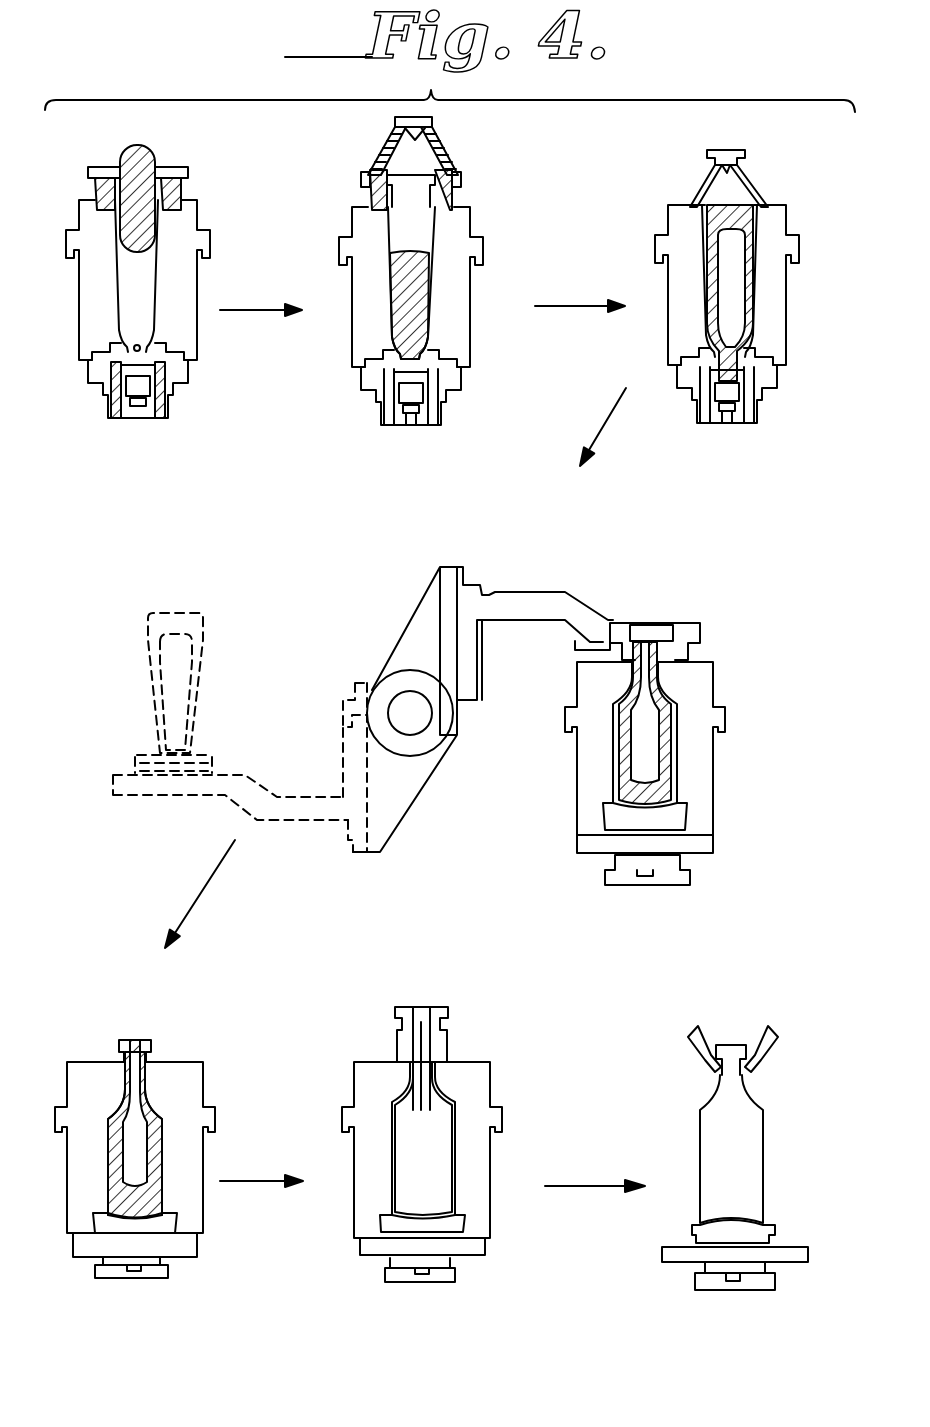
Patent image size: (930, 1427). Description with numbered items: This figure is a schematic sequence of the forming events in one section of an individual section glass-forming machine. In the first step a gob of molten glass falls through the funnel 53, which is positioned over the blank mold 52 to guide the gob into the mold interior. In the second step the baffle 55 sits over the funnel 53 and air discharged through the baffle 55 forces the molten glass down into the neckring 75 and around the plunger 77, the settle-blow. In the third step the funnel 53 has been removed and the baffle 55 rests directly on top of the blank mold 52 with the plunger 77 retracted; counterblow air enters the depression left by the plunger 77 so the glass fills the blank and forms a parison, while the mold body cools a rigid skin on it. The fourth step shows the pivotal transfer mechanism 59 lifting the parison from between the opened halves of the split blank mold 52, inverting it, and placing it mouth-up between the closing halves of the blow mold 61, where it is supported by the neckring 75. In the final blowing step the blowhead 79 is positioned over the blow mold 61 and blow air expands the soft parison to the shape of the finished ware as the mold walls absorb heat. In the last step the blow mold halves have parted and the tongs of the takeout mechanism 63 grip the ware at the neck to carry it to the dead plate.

The blank mold 52 is at (198, 283).
The funnel 53 is at (183, 192).
The baffle 55 is at (445, 150).
The pivotal transfer mechanism 59 is at (492, 593).
The blow mold 61 is at (715, 686).
The takeout mechanism 63 is at (770, 1045).
The neckring 75 is at (185, 381).
The plunger 77 is at (412, 425).
The blowhead 79 is at (445, 1020).